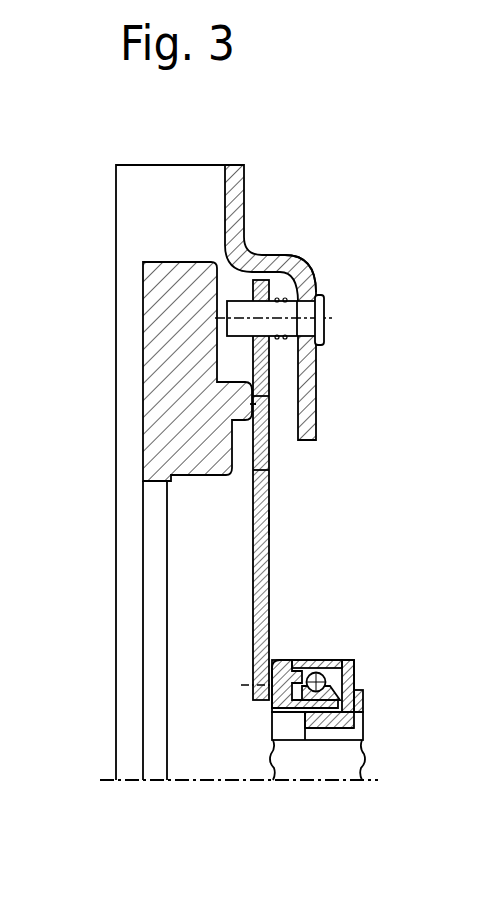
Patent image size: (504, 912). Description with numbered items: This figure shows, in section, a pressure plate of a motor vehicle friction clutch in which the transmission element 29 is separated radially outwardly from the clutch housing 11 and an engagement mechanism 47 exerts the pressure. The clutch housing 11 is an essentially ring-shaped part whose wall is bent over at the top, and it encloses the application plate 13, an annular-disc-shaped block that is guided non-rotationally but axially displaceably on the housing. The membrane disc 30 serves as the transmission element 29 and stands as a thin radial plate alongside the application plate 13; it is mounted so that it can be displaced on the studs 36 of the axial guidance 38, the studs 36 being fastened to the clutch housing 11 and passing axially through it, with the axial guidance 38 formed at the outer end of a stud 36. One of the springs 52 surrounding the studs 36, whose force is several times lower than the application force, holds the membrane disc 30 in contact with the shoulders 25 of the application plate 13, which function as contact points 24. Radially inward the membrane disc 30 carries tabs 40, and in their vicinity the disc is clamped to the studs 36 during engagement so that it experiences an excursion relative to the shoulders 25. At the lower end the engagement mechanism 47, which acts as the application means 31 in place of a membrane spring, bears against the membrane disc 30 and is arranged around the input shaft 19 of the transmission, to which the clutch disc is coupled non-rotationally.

The clutch housing 11 is at (236, 203).
The application plate 13 is at (172, 266).
The springs 52 is at (281, 292).
The axial guidance 38 is at (333, 299).
The studs 36 is at (320, 320).
The contact points 24 is at (263, 403).
The shoulders 25 is at (255, 405).
The membrane disc 30 is at (263, 477).
The transmission element 29 is at (272, 523).
The tabs 40 is at (263, 569).
The application means 31 is at (320, 657).
The engagement mechanism 47 is at (347, 658).
The input shaft 19 is at (345, 756).